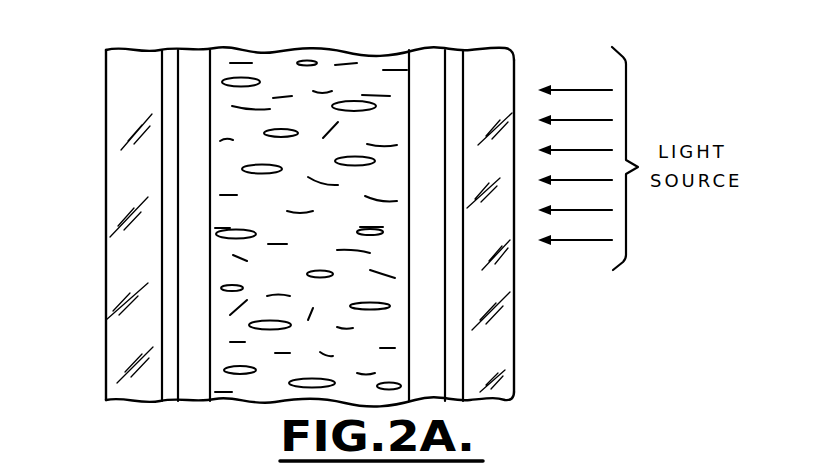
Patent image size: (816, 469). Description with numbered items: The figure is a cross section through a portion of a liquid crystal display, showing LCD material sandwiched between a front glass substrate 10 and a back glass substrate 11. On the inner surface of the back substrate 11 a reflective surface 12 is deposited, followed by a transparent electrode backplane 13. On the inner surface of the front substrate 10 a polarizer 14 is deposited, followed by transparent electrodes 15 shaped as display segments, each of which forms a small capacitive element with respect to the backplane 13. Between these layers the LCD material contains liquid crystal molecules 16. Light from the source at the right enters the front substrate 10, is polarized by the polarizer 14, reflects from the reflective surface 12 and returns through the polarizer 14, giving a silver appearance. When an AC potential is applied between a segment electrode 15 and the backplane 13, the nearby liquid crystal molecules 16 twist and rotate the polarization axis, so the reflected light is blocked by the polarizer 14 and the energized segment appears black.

The front glass substrate 10 is at (515, 309).
The back glass substrate 11 is at (116, 197).
The reflective surface 12 is at (168, 52).
The transparent electrode backplane 13 is at (197, 62).
The polarizer 14 is at (453, 62).
The transparent electrodes 15 is at (416, 62).
The liquid crystal molecules 16 is at (329, 66).